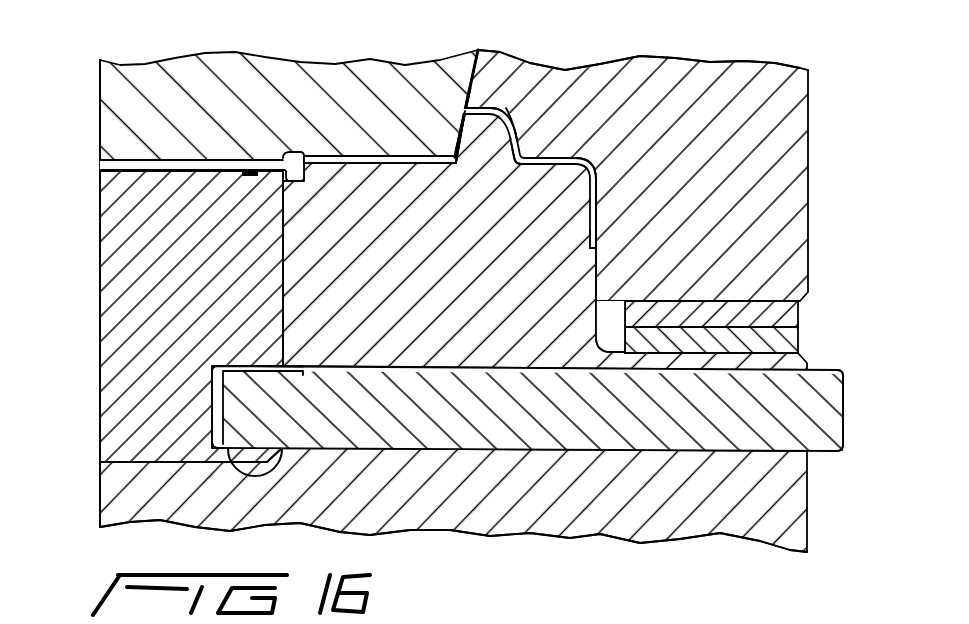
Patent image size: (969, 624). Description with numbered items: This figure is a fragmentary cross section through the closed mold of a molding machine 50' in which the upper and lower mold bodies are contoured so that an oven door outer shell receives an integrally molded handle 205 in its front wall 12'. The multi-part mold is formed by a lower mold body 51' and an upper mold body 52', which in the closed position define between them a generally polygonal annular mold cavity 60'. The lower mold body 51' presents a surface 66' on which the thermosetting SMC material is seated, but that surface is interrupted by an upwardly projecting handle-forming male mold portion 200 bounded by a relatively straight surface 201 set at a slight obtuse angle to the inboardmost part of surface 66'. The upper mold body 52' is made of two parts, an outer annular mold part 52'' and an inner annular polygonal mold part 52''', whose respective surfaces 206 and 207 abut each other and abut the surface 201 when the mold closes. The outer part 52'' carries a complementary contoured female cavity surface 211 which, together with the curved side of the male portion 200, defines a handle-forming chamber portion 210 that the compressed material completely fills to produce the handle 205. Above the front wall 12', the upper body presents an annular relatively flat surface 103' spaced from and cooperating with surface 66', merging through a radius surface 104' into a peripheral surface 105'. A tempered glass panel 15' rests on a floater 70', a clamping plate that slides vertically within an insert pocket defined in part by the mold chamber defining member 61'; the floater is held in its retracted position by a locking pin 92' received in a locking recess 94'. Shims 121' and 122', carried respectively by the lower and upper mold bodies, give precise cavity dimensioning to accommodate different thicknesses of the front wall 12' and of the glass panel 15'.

The upper mold body 52' is at (643, 42).
The outer annular mold part 52'' is at (636, 166).
The inner annular polygonal mold part 52''' is at (289, 88).
The surface 206 is at (472, 50).
The relatively straight surface 201 is at (455, 132).
The integrally molded handle 205 is at (500, 109).
The complementary contoured female cavity surface 211 is at (533, 130).
The handle-forming chamber portion 210 is at (525, 143).
The radius surface 104' is at (621, 163).
The annular mold cavity 60' is at (638, 212).
The peripheral surface 105' is at (639, 226).
The shim 122' is at (746, 305).
The shim 121' is at (746, 349).
The tempered glass panel 15' is at (195, 142).
The annular relatively flat surface 103' is at (369, 144).
The surface 66' is at (452, 186).
The surface 207 is at (458, 161).
The front wall 12' is at (530, 178).
The handle-forming male mold portion 200 is at (525, 182).
The floater 70' is at (163, 293).
The locking recess 94' is at (259, 407).
The mold chamber defining member 61' is at (527, 400).
The locking pin 92' is at (845, 441).
The molding machine 50' is at (453, 521).
The lower mold body 51' is at (453, 554).